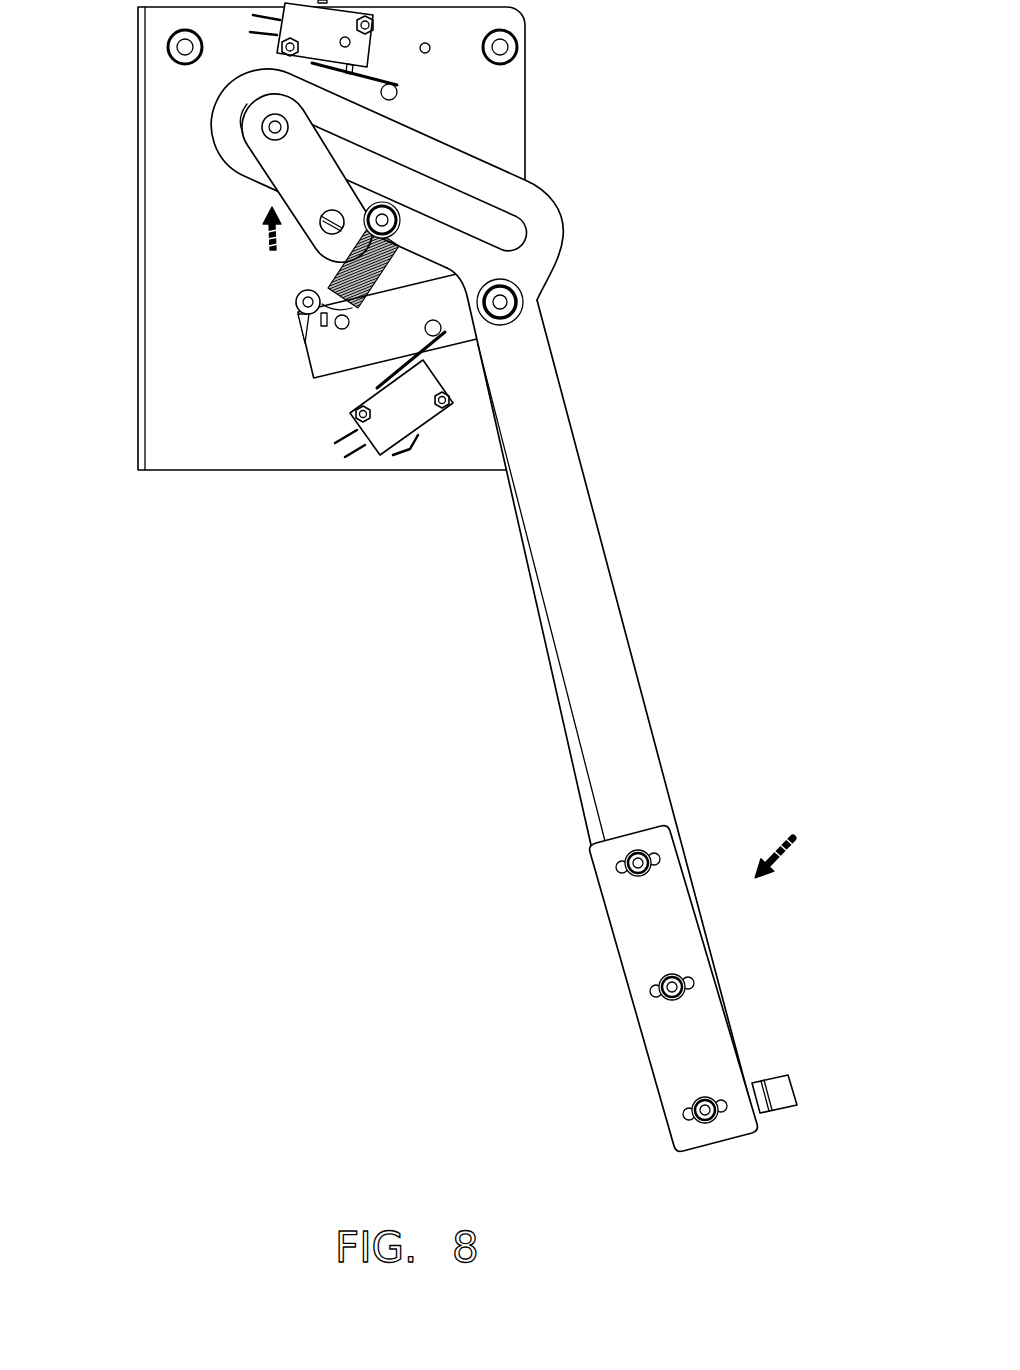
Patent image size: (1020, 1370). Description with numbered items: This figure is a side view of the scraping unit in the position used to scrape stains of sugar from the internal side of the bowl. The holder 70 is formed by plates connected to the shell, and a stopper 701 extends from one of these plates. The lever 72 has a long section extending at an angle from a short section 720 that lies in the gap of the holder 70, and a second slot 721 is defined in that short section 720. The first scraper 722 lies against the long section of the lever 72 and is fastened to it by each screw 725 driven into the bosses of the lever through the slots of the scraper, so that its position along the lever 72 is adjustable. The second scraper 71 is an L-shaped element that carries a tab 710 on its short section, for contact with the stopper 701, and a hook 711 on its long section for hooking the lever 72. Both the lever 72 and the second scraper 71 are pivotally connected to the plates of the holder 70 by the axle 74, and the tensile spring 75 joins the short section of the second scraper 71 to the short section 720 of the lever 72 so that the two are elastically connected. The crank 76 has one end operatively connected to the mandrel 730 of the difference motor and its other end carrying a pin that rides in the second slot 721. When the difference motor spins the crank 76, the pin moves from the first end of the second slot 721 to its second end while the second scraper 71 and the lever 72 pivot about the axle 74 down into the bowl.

The holder 70 is at (516, 80).
The second scraper 71 is at (590, 795).
The lever 72 is at (484, 604).
The axle 74 is at (523, 302).
The tensile spring 75 is at (343, 275).
The crank 76 is at (272, 158).
The stopper 701 is at (306, 303).
The tab 710 is at (304, 340).
The hook 711 is at (780, 1100).
The short section 720 is at (436, 184).
The second slot 721 is at (487, 218).
The first scraper 722 is at (621, 989).
The screw 725 is at (613, 860).
The mandrel 730 is at (320, 220).